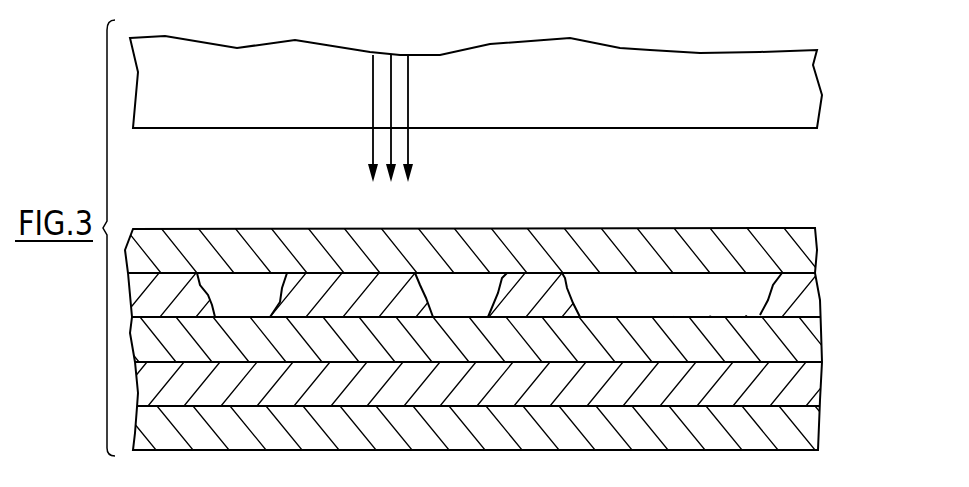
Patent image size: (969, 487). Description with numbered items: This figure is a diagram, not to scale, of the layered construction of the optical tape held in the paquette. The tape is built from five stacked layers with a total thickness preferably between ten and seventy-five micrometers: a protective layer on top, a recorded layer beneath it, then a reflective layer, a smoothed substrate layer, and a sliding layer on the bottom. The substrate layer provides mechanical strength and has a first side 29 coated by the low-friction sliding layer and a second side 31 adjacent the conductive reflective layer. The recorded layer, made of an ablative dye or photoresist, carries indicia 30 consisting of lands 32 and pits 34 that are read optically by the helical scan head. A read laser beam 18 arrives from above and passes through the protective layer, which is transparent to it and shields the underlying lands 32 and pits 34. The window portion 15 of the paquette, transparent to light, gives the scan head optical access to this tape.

The window portion 15 is at (800, 88).
The read laser beam 18 is at (410, 103).
The first side 29 is at (157, 407).
The indicia 30 is at (110, 306).
The second side 31 is at (152, 360).
The lands 32 is at (137, 293).
The pits 34 is at (242, 285).